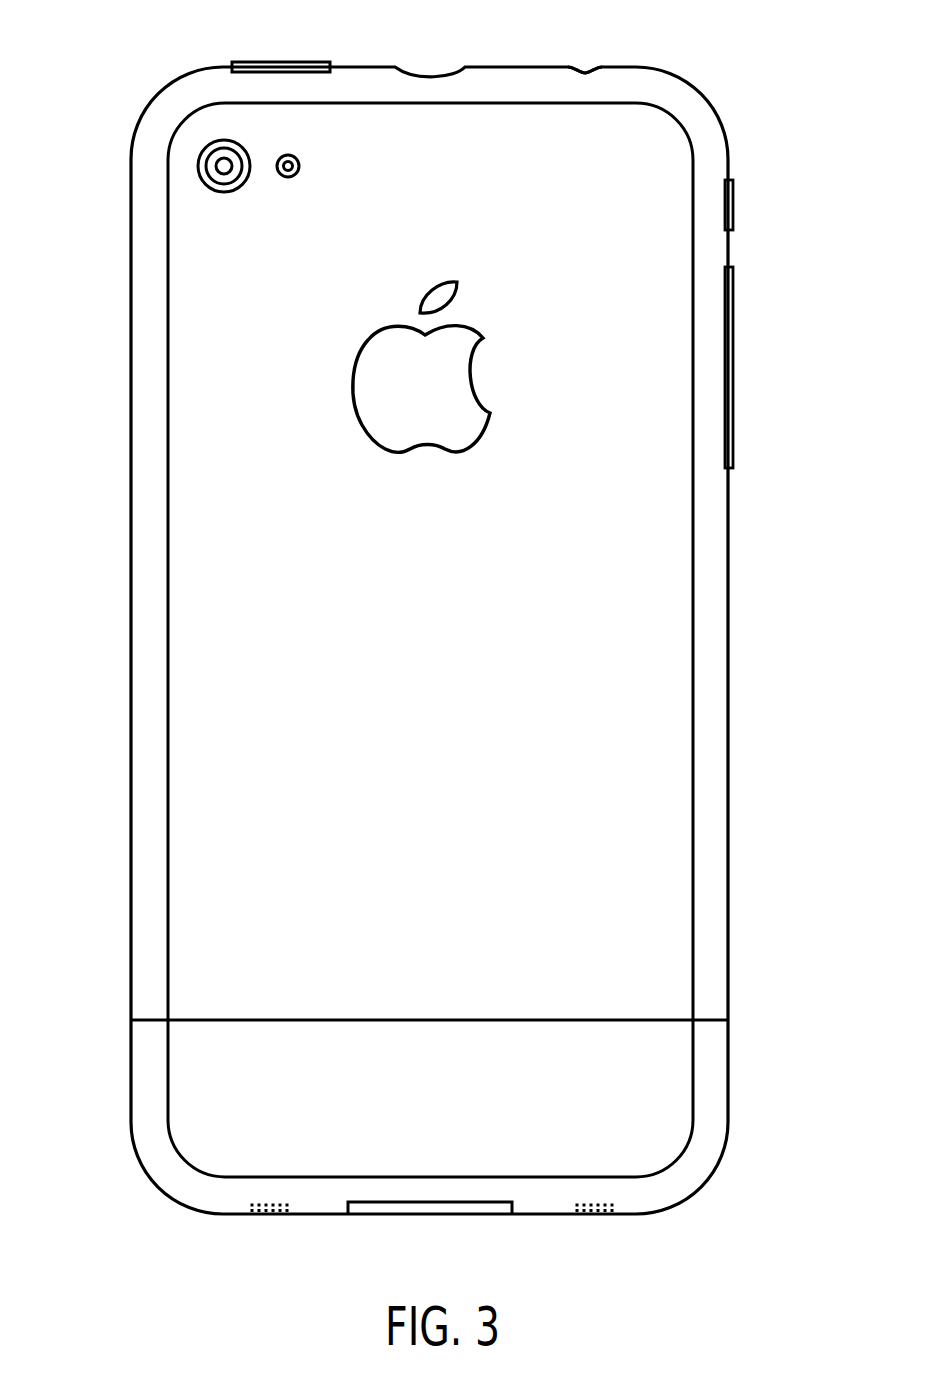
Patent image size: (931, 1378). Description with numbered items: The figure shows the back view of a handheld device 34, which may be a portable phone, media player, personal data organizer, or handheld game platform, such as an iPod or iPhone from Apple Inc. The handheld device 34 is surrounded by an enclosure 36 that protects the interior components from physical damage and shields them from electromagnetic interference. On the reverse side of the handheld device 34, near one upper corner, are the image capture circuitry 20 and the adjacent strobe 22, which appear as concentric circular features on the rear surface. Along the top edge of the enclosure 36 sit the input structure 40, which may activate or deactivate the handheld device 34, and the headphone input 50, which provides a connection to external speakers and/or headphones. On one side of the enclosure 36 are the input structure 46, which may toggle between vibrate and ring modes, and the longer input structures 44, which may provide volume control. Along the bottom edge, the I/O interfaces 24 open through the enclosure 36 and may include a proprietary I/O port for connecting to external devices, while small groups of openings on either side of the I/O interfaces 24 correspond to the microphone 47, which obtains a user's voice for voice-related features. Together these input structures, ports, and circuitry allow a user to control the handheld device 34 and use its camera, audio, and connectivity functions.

The handheld device 34 is at (160, 43).
The enclosure 36 is at (131, 425).
The input structure 40 is at (283, 62).
The headphone input 50 is at (586, 72).
The image capture circuitry 20 is at (254, 184).
The strobe 22 is at (308, 158).
The input structure 46 is at (735, 203).
The input structures 44 is at (735, 318).
The I/O interfaces 24 is at (432, 1216).
The microphone 47 is at (265, 1215).